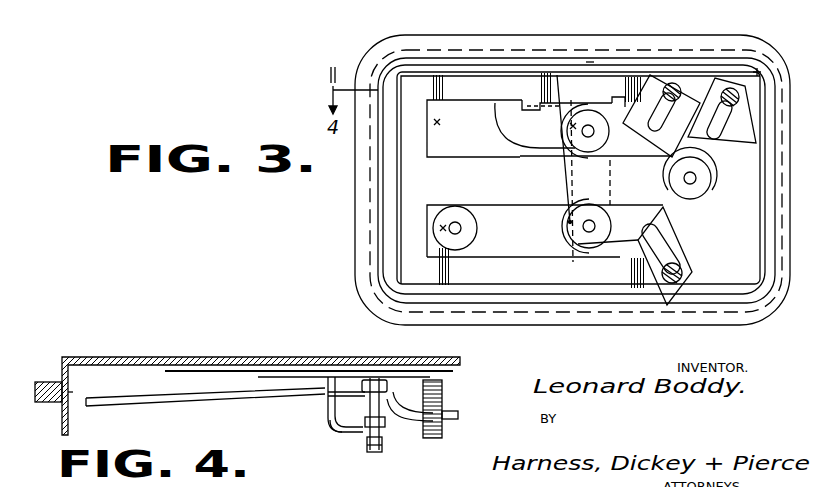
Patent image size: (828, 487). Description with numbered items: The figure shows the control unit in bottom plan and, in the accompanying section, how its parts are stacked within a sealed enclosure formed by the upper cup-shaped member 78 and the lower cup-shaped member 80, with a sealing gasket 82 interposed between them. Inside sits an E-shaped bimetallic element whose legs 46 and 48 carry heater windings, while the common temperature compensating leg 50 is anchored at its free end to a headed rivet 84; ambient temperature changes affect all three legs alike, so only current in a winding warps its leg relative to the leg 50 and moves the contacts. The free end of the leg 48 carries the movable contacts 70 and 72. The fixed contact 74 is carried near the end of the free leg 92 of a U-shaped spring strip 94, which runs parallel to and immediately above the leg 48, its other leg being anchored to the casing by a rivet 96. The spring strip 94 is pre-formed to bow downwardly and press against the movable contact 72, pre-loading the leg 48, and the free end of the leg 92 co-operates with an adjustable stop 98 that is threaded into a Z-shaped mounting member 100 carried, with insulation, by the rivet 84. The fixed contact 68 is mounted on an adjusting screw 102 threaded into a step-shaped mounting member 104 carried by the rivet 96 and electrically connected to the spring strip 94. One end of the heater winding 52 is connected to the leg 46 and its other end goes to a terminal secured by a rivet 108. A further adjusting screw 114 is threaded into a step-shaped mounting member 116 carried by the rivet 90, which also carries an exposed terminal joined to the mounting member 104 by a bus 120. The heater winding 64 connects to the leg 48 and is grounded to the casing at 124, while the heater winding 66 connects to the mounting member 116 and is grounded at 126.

In FIG. 3, the bimetallic leg 46 is at (548, 284).
In FIG. 3, the bimetallic leg 48 is at (493, 83).
In FIG. 4, the bimetallic leg 48 is at (118, 406).
In FIG. 3, the temperature compensating leg 50 is at (540, 188).
In FIG. 3, the heater winding 52 is at (452, 267).
In FIG. 3, the heater winding 64 is at (627, 77).
In FIG. 3, the heater winding 66 is at (445, 88).
In FIG. 4, the fixed contact 68 is at (365, 418).
In FIG. 4, the movable contact 70 is at (392, 412).
In FIG. 4, the movable contact 72 is at (368, 383).
In FIG. 4, the fixed contact 74 is at (377, 380).
In FIG. 4, the upper cup-shaped member 78 is at (95, 356).
In FIG. 4, the lower cup-shaped member 80 is at (62, 417).
In FIG. 4, the sealing gasket 82 is at (70, 392).
In FIG. 3, the headed rivet 84 is at (708, 203).
In FIG. 3, the rivet 90 is at (605, 218).
In FIG. 3, the free leg of spring strip 92 is at (672, 157).
In FIG. 3, the U-shaped spring strip 94 is at (497, 126).
In FIG. 4, the U-shaped spring strip 94 is at (182, 371).
In FIG. 3, the rivet 96 is at (590, 62).
In FIG. 3, the adjustable stop 98 is at (757, 70).
In FIG. 4, the adjustable stop 98 is at (445, 433).
In FIG. 3, the Z-shaped mounting member 100 is at (712, 179).
In FIG. 4, the Z-shaped mounting member 100 is at (458, 414).
In FIG. 3, the adjusting screw 102 is at (673, 83).
In FIG. 4, the adjusting screw 102 is at (382, 447).
In FIG. 3, the step-shaped mounting member 104 is at (732, 88).
In FIG. 4, the step-shaped mounting member 104 is at (343, 432).
In FIG. 3, the rivet 108 is at (470, 215).
In FIG. 3, the adjusting screw 114 is at (672, 283).
In FIG. 3, the step-shaped mounting member 116 is at (657, 280).
In FIG. 3, the bus 120 is at (606, 142).
In FIG. 3, the ground connection 124 is at (623, 97).
In FIG. 3, the ground connection 126 is at (437, 122).